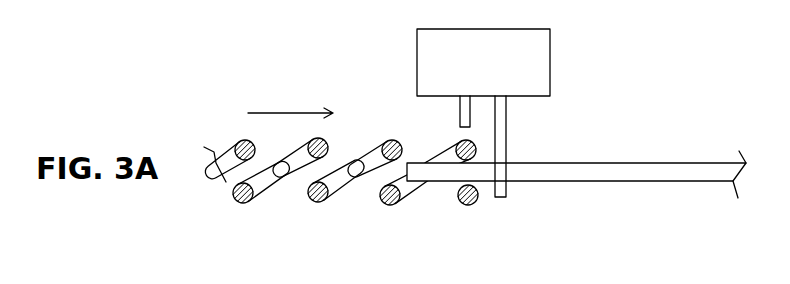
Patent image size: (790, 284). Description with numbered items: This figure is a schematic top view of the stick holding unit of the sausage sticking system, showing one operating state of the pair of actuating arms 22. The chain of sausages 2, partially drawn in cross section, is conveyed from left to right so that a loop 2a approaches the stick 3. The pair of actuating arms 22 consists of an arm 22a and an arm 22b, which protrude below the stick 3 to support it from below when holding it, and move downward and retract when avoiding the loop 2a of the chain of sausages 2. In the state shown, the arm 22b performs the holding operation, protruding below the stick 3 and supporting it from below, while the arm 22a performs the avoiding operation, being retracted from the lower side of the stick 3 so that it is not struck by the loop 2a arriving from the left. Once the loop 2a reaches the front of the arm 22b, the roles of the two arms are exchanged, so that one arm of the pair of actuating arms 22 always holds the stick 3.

The chain of sausages 2 is at (350, 199).
The loop 2a is at (308, 173).
The stick 3 is at (662, 169).
The pair of actuating arms 22 is at (543, 50).
The arm 22a is at (450, 108).
The arm 22b is at (492, 191).